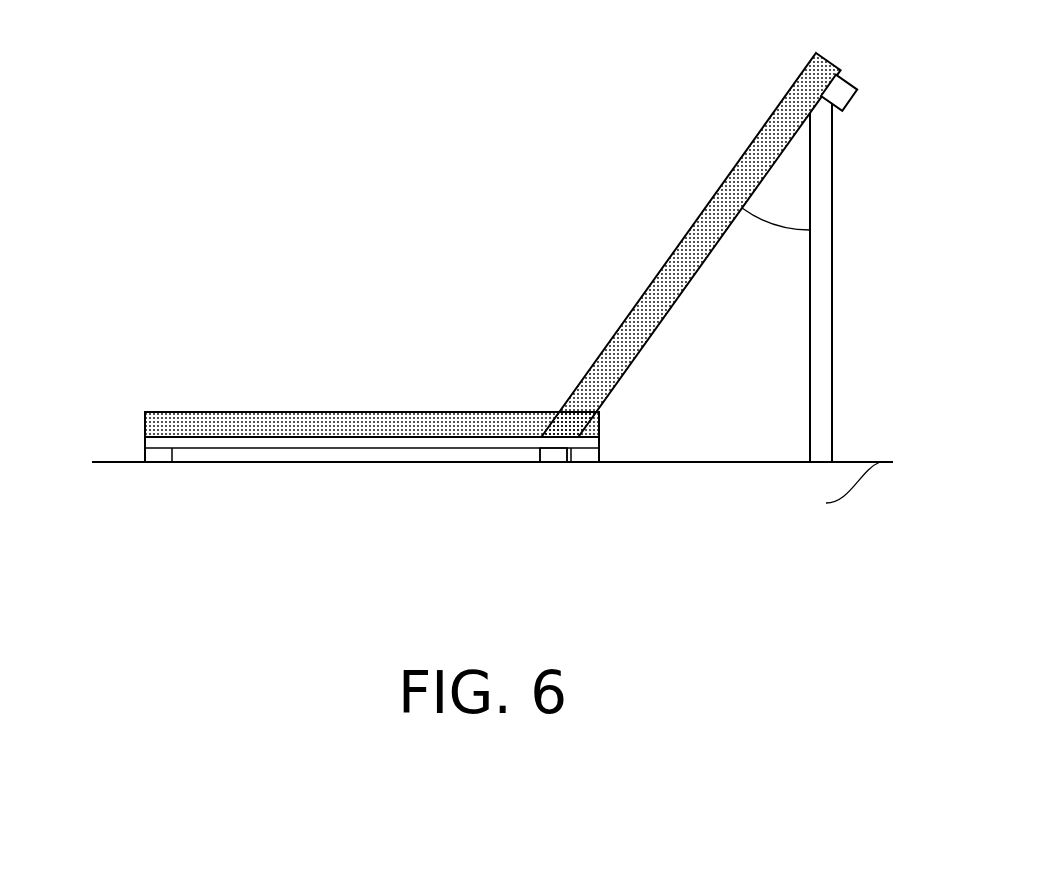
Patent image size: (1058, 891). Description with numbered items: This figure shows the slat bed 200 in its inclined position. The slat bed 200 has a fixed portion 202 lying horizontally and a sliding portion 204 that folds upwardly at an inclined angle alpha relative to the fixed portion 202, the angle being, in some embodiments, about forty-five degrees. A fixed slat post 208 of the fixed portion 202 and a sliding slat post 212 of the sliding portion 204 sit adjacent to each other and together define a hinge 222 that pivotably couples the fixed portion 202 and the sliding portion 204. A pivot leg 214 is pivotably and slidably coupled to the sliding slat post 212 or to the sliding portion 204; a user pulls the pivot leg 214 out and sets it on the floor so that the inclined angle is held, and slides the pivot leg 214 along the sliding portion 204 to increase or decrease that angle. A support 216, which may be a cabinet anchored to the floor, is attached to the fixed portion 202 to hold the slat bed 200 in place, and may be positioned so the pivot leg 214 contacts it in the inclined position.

The slat bed 200 is at (474, 269).
The fixed portion 202 is at (358, 440).
The sliding portion 204 is at (733, 65).
The fixed slat post 208 is at (174, 451).
The sliding slat post 212 is at (851, 80).
The pivot leg 214 is at (833, 268).
The support 216 is at (363, 449).
The hinge 222 is at (545, 388).